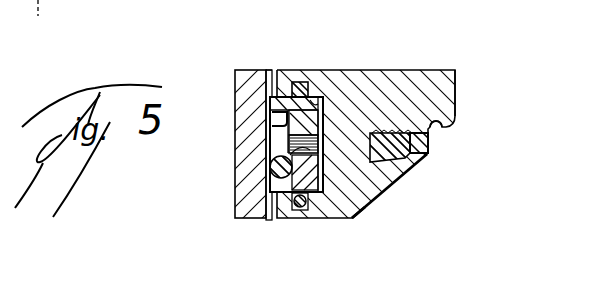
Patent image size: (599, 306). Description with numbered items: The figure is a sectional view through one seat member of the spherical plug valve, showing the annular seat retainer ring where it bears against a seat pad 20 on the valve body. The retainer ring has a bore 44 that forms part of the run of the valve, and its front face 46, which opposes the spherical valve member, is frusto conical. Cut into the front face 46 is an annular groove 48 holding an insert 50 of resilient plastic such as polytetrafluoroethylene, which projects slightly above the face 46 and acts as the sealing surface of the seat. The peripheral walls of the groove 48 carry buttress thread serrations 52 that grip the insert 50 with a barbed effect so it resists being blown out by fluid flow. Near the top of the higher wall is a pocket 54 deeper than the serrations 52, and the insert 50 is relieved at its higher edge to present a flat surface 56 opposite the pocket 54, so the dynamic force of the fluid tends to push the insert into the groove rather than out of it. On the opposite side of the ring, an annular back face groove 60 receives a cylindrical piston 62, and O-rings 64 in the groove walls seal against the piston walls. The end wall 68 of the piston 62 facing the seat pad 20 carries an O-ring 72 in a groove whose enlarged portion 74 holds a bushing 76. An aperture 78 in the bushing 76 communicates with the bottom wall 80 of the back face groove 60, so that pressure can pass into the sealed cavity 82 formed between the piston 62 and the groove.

The seat pad 20 is at (272, 77).
The bore 44 is at (343, 220).
The front face 46 is at (386, 195).
The annular groove 48 is at (392, 176).
The insert 50 is at (415, 156).
The buttress thread serrations 52 is at (404, 132).
The pocket 54 is at (442, 129).
The flat surface 56 is at (432, 142).
The back face groove 60 is at (323, 111).
The piston 62 is at (313, 192).
The O-rings 64 is at (302, 206).
The end wall 68 is at (278, 117).
The O-ring 72 is at (269, 168).
The enlarged portion 74 is at (284, 106).
The bushing 76 is at (300, 140).
The aperture 78 is at (300, 152).
The bottom wall 80 is at (281, 119).
The sealed cavity 82 is at (358, 213).